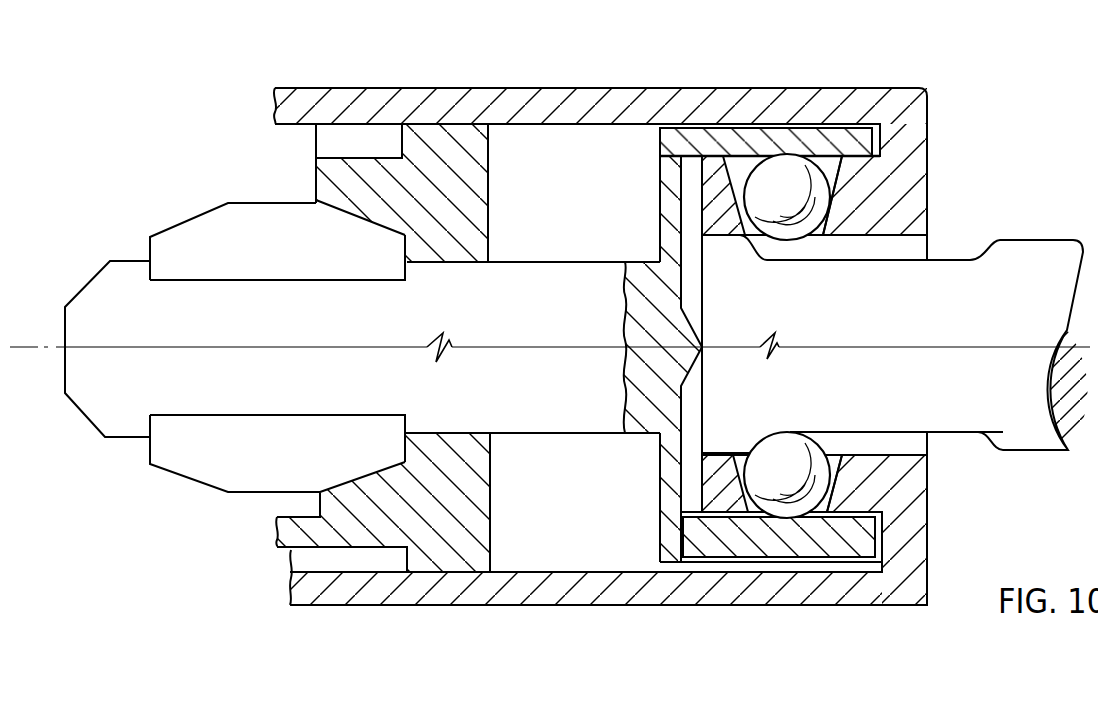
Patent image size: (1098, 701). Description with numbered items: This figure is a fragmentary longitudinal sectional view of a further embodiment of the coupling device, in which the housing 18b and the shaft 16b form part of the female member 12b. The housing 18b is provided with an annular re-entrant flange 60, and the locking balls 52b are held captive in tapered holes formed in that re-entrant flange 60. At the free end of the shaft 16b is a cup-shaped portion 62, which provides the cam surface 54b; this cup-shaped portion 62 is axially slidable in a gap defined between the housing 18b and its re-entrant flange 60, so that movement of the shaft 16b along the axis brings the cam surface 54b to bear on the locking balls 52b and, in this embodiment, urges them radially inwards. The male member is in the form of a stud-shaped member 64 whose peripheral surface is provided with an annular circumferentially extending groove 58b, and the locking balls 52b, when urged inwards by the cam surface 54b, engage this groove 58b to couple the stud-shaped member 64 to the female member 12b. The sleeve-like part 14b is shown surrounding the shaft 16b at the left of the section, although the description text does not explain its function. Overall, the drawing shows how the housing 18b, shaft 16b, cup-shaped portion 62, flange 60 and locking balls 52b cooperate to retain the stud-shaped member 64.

The female member 12b is at (303, 606).
The sleeve 14b is at (195, 455).
The shaft 16b is at (563, 392).
The housing 18b is at (462, 589).
The locking balls 52b is at (790, 187).
The cam surface 54b is at (830, 503).
The annular circumferentially extending groove 58b is at (957, 433).
The annular re-entrant flange 60 is at (720, 500).
The cup-shaped portion 62 is at (742, 140).
The stud-shaped member 64 is at (900, 275).